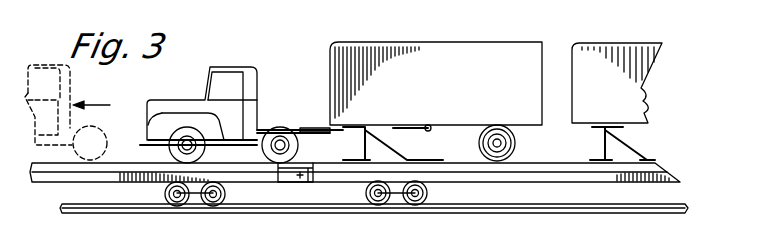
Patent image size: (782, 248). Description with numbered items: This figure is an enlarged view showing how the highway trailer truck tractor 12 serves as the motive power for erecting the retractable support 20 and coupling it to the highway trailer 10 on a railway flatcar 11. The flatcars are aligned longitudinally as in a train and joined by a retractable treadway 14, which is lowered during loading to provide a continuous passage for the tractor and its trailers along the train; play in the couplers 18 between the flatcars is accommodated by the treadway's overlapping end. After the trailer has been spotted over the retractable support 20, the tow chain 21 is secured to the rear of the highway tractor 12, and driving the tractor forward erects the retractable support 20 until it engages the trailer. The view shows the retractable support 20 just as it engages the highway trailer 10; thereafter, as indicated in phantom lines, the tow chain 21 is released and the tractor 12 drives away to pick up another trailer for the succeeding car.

The highway trailer 10 is at (510, 68).
The railway flatcar 11 is at (562, 177).
The highway trailer truck tractor 12 is at (228, 87).
The retractable treadway 14 is at (305, 180).
The coupler 18 is at (287, 180).
The retractable support 20 is at (392, 128).
The tow chain 21 is at (303, 122).